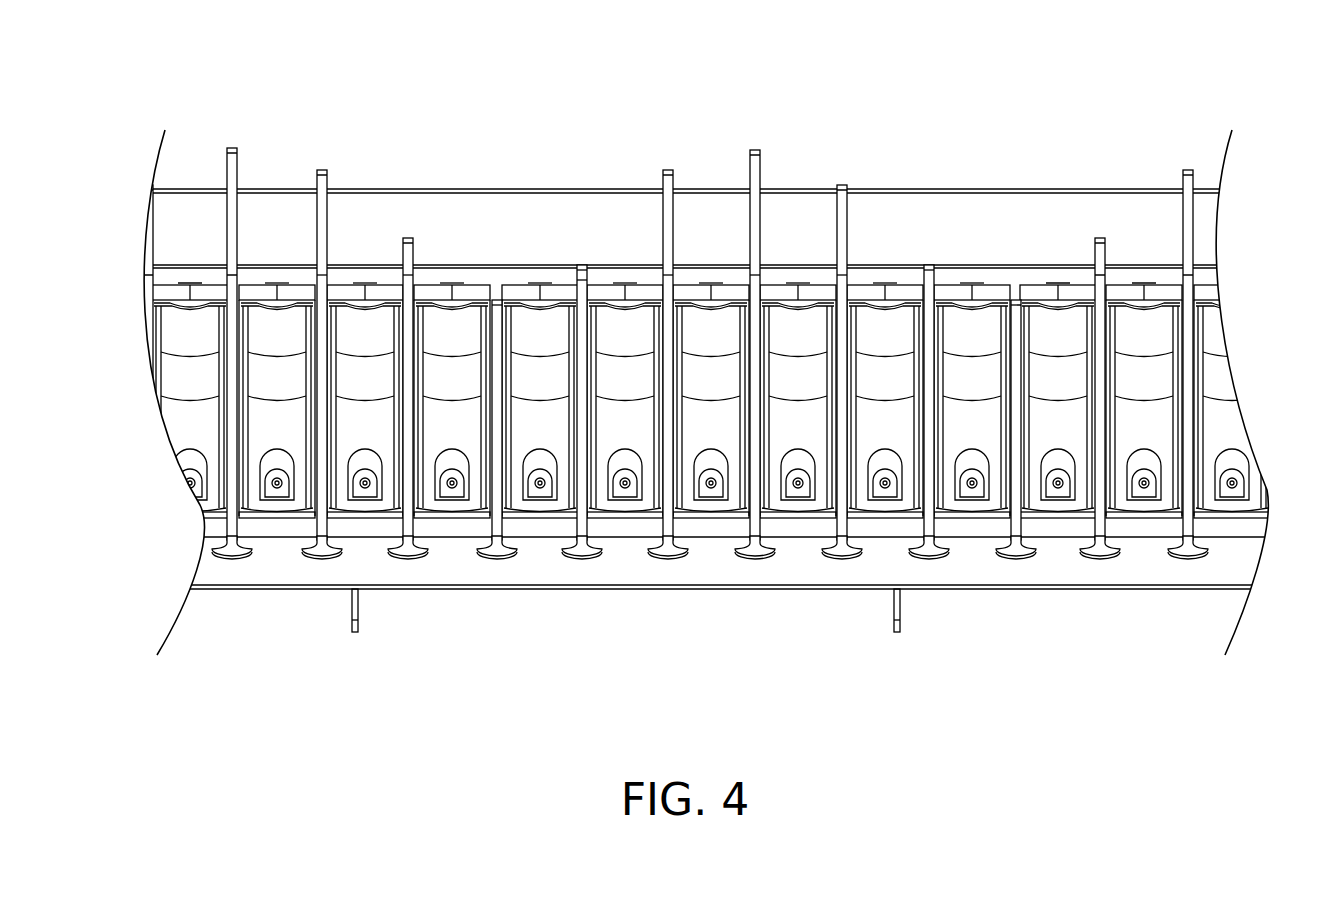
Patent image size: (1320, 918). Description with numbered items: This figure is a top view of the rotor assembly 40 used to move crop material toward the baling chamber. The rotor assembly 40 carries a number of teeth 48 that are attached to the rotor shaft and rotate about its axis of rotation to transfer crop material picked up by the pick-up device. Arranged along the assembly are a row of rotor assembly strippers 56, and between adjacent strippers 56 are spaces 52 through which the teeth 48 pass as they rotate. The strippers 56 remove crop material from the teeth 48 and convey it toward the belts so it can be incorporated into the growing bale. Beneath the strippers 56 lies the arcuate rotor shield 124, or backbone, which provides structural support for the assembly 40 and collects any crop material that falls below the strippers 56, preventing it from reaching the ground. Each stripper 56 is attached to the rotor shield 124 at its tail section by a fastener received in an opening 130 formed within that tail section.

The rotor assembly 40 is at (699, 350).
The teeth 48 is at (585, 277).
The rotor assembly stripper 56 is at (537, 337).
The space 52 is at (582, 492).
The opening 130 is at (800, 490).
The rotor shield 124 is at (714, 573).